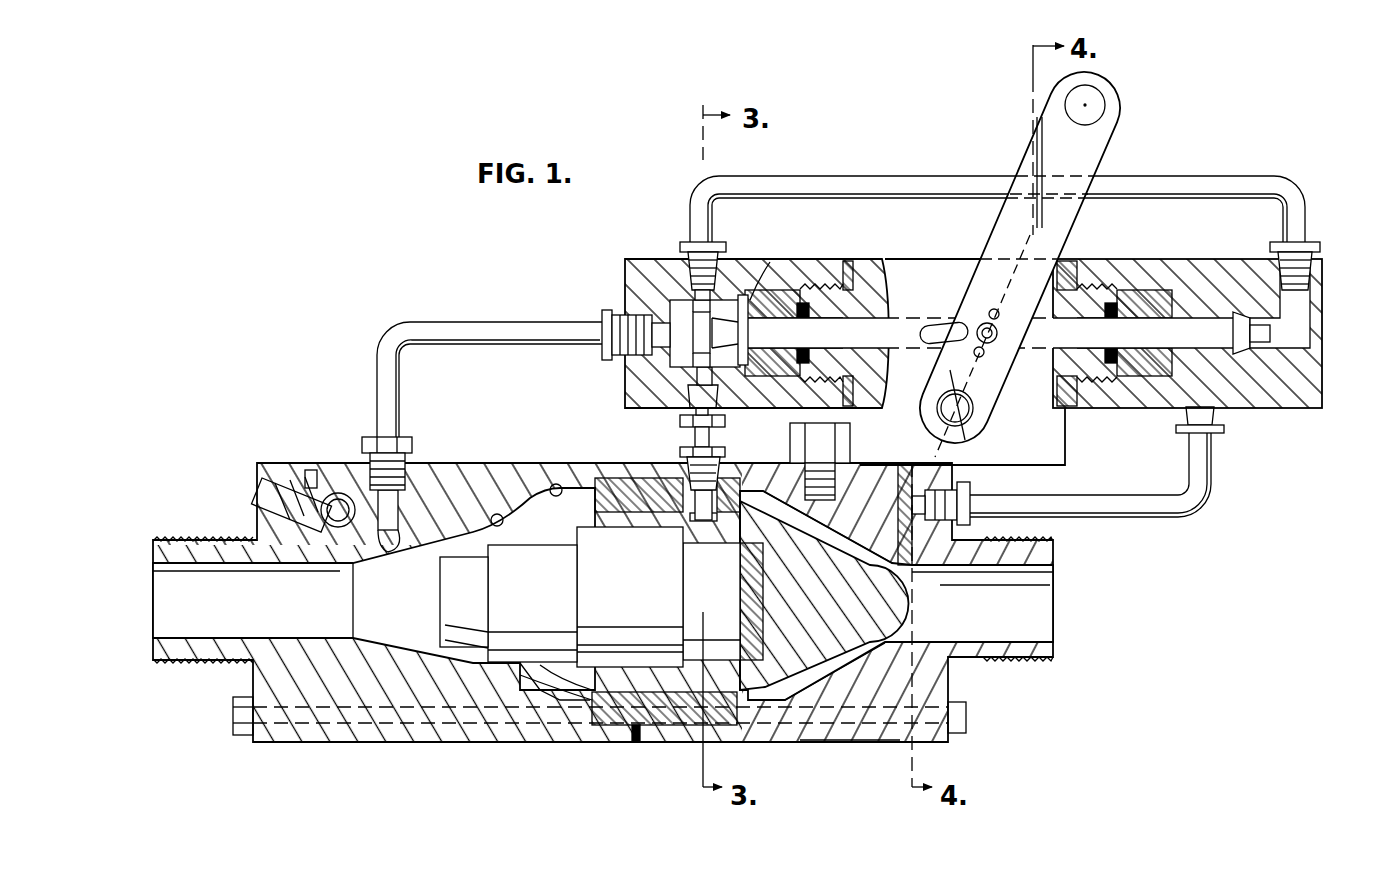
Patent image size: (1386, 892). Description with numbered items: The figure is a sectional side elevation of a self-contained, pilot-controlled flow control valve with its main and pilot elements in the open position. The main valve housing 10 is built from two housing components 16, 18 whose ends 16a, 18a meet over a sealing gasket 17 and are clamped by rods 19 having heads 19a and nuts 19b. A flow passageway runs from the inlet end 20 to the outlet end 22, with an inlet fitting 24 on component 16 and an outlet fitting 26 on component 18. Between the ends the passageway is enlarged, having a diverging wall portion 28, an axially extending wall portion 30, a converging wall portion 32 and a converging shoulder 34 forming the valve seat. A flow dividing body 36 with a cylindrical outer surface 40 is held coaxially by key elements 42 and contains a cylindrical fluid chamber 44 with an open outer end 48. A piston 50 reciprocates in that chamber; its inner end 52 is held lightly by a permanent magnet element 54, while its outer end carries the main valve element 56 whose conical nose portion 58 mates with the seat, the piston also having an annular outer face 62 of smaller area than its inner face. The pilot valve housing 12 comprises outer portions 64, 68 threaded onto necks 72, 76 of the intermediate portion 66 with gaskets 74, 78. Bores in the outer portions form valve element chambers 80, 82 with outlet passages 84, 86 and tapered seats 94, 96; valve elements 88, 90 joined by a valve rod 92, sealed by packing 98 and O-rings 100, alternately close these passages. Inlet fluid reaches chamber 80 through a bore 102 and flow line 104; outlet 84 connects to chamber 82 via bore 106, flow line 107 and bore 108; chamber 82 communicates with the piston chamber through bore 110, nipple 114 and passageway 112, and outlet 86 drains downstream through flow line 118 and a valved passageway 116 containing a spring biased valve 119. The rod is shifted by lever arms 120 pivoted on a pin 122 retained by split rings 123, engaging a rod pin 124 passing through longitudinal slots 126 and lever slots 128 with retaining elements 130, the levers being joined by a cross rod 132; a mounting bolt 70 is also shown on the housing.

The main valve housing 10 is at (305, 412).
The pilot valve housing 12 is at (632, 245).
The housing component 16 is at (868, 748).
The end of housing component 16a is at (925, 742).
The sealing gasket 17 is at (650, 744).
The housing component 18 is at (560, 746).
The end of housing component 18a is at (585, 744).
The rod 19 is at (775, 690).
The head 19a is at (967, 718).
The nut 19b is at (243, 736).
The inlet end 20 is at (1037, 607).
The outlet end 22 is at (172, 601).
The inlet fitting 24 is at (973, 660).
The outlet fitting 26 is at (240, 540).
The diverging wall portion 28 is at (750, 480).
The axially extending wall portion 30 is at (556, 484).
The radially converging wall portion 32 is at (497, 514).
The radially converging shoulder 34 is at (395, 532).
The flow dividing body 36 is at (775, 690).
The outer surface 40 is at (555, 505).
The key element 42 is at (628, 492).
The cylindrical fluid chamber 44 is at (685, 540).
The open outer end 48 is at (525, 692).
The piston 50 is at (630, 597).
The inner end of piston 52 is at (723, 601).
The permanent magnet element 54 is at (760, 602).
The main valve element 56 is at (508, 603).
The conical nose portion 58 is at (458, 585).
The annular outer face 62 is at (565, 700).
The outer housing portion 64 is at (1205, 265).
The intermediate housing portion 66 is at (971, 272).
The outer housing portion 68 is at (642, 262).
The mounting bolt 70 is at (842, 433).
The externally threaded neck 72 is at (1070, 292).
The sealing gasket 74 is at (1072, 275).
The externally threaded neck 76 is at (848, 280).
The sealing gasket 78 is at (830, 290).
The valve element chamber 80 is at (1220, 360).
The valve element chamber 82 is at (690, 260).
The outlet passage 84 is at (1262, 320).
The outlet passage 86 is at (655, 343).
The valve element 88 is at (1258, 345).
The valve element 90 is at (762, 300).
The valve rod 92 is at (988, 333).
The tapered seat portion 94 is at (1302, 256).
The tapered seat portion 96 is at (678, 307).
The packing 98 is at (778, 290).
The O-ring 100 is at (800, 365).
The bore 102 is at (925, 538).
The flow line 104 is at (1215, 477).
The bore 106 is at (1300, 300).
The flow line 107 is at (1105, 180).
The bore 108 is at (722, 200).
The bore 110 is at (700, 333).
The passageway 112 is at (690, 523).
The nipple 114 is at (697, 423).
The valved passageway 116 is at (385, 462).
The flow line 118 is at (518, 322).
The spring biased valve 119 is at (302, 475).
The lever arm 120 is at (1100, 135).
The pin 122 is at (978, 422).
The retaining element 123 is at (972, 412).
The pin 124 is at (985, 322).
The longitudinal slot 126 is at (962, 335).
The slot 128 is at (995, 310).
The pin retaining element 130 is at (947, 380).
The cross rod 132 is at (1092, 100).